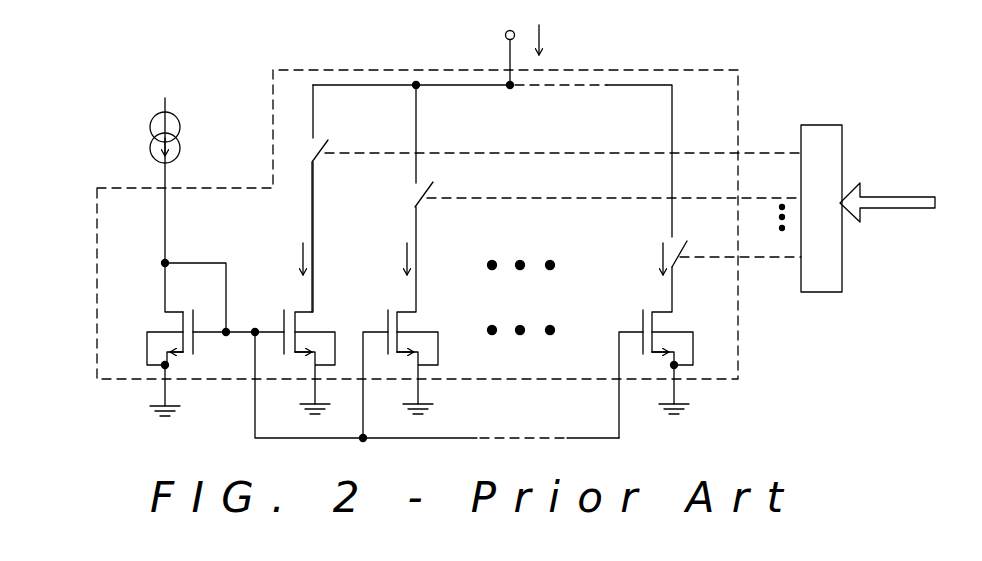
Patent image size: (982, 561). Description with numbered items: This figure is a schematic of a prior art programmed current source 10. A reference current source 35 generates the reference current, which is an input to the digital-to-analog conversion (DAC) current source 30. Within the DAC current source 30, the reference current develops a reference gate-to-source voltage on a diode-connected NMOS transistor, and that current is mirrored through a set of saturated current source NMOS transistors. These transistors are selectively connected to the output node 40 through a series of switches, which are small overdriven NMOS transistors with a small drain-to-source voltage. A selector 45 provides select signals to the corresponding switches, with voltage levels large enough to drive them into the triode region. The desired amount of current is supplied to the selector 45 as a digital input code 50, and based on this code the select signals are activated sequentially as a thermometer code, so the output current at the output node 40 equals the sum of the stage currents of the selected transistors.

The programmed current source 10 is at (125, 61).
The digital-to-analog conversion (DAC) current source 30 is at (352, 68).
The reference current source 35 is at (150, 127).
The output node 40 is at (505, 35).
The selector 45 is at (817, 124).
The digital input code 50 is at (880, 195).